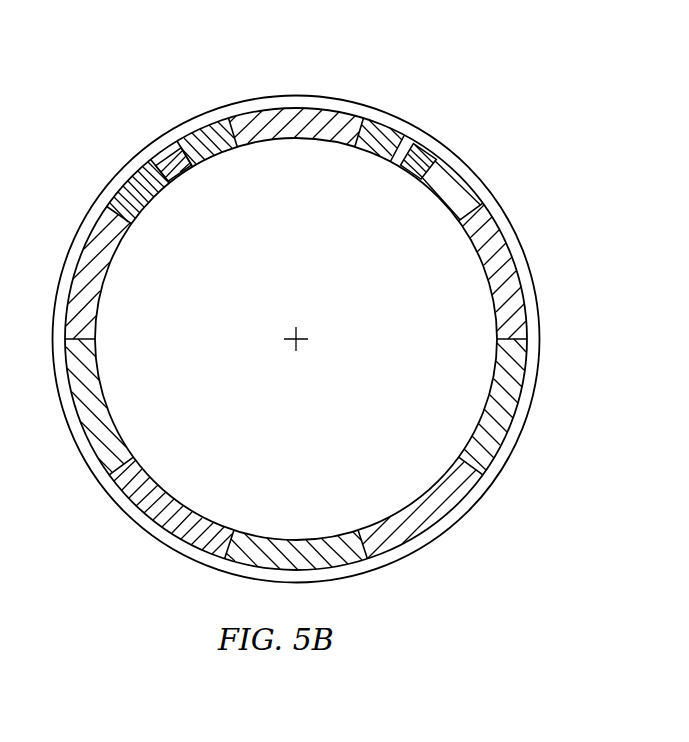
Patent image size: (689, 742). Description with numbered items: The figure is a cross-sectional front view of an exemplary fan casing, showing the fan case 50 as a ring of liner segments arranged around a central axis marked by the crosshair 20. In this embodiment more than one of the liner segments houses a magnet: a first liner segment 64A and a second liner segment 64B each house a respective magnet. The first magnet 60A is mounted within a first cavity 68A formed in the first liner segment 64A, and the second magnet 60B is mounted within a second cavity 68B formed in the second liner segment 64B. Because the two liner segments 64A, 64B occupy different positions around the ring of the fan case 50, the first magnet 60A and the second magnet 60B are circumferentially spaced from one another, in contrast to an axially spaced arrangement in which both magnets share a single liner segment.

The fan case 50 is at (470, 102).
The center axis 20 is at (300, 352).
The first magnet 60A is at (167, 174).
The second magnet 60B is at (417, 170).
The first liner segment 64A is at (207, 135).
The second liner segment 64B is at (380, 128).
The first cavity 68A is at (196, 157).
The second cavity 68B is at (398, 152).